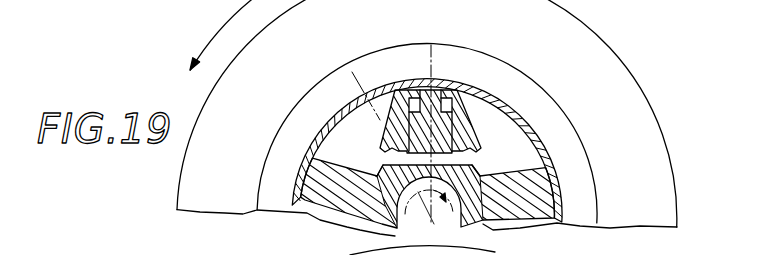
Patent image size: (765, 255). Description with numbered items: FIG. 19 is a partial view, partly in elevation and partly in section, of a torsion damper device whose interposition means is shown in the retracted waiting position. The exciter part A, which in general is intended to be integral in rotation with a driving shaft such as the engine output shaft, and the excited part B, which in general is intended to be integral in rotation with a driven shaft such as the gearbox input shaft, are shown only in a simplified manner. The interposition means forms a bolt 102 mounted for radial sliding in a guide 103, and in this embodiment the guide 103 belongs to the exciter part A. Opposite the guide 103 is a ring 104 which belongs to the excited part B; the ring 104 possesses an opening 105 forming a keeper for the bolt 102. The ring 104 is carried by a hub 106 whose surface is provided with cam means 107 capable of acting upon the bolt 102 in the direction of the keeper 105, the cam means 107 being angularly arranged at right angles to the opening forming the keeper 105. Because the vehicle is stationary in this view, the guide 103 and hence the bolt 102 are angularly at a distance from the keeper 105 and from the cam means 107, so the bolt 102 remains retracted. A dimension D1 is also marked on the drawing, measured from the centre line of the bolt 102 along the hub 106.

The bolt 102 is at (460, 118).
The guide 103 is at (481, 135).
The ring 104 is at (466, 84).
The opening 105 is at (355, 100).
The hub 106 is at (385, 206).
The cam means 107 is at (401, 164).
The exciter part A is at (660, 105).
The excited part B is at (570, 205).
The dimension D1 is at (431, 65).